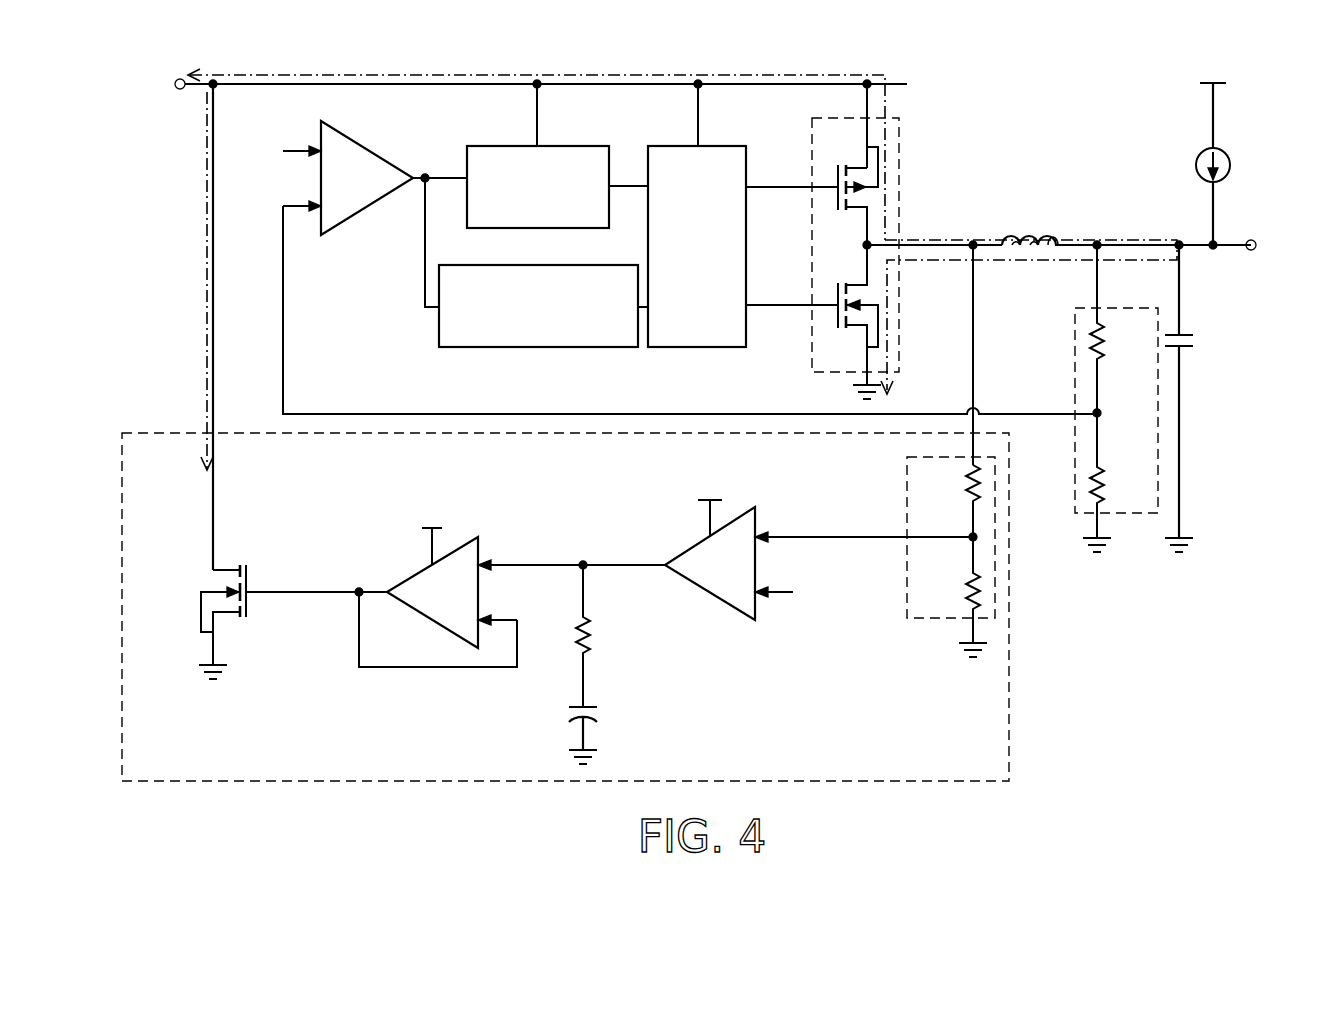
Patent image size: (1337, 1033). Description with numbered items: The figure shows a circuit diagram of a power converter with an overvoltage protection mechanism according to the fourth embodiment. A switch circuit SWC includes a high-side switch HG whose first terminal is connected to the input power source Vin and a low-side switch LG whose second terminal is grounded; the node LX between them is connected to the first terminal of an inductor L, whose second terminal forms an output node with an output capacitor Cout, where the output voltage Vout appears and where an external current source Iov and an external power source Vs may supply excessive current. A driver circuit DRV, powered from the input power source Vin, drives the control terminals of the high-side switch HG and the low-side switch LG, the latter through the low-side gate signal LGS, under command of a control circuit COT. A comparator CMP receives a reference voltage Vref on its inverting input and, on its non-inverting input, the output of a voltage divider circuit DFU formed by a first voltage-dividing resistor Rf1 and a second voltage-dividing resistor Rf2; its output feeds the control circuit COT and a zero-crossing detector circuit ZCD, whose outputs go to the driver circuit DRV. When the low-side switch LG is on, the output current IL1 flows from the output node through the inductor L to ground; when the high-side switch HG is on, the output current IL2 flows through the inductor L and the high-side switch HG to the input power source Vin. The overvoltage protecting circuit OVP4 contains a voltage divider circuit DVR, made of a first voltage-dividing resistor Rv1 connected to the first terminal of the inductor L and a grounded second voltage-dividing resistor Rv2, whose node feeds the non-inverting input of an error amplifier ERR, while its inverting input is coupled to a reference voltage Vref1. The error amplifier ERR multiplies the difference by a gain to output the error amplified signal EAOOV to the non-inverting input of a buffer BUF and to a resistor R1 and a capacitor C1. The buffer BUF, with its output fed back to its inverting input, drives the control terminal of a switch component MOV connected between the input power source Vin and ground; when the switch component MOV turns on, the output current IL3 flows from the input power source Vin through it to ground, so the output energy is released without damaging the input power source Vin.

The input power source Vin is at (157, 85).
The output current along second current releasing path IL2 is at (536, 141).
The output current along third current releasing path IL3 is at (185, 281).
The reference voltage Vref is at (274, 151).
The comparator CMP is at (366, 205).
The control circuit COT is at (477, 146).
The driver circuit DRV is at (685, 146).
The zero-crossing detector circuit ZCD is at (468, 347).
The switch circuit SWC is at (900, 145).
The high-side switch HG is at (812, 188).
The low-side switch LG is at (813, 322).
The low-side gate signal LGS is at (792, 290).
The node LX is at (912, 246).
The output current along first current releasing path IL1 is at (1029, 317).
The inductor L is at (1110, 225).
The external power source Vs is at (1210, 99).
The external current source Iov is at (1234, 198).
The output voltage Vout is at (1282, 246).
The output capacitor Cout is at (1210, 396).
The voltage divider circuit DFU is at (1130, 513).
The first voltage-dividing resistor Rf1 is at (1119, 329).
The second voltage-dividing resistor Rf2 is at (1116, 482).
The overvoltage protecting circuit OVP4 is at (1009, 680).
The voltage divider circuit DVR is at (937, 618).
The first voltage-dividing resistor Rv1 is at (947, 503).
The second voltage-dividing resistor Rv2 is at (950, 597).
The error amplifier ERR is at (712, 593).
The reference voltage Vref1 is at (811, 593).
The error amplified signal EAOOV is at (583, 548).
The resistor R1 is at (603, 636).
The capacitor C1 is at (599, 732).
The buffer BUF is at (410, 578).
The switch component MOV is at (188, 622).